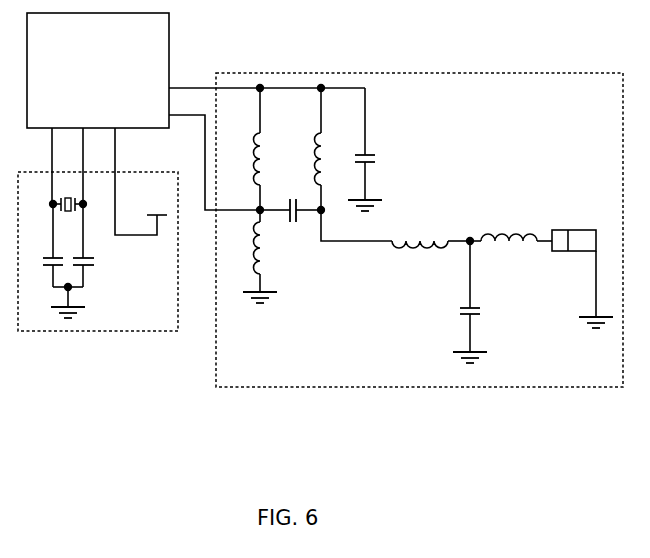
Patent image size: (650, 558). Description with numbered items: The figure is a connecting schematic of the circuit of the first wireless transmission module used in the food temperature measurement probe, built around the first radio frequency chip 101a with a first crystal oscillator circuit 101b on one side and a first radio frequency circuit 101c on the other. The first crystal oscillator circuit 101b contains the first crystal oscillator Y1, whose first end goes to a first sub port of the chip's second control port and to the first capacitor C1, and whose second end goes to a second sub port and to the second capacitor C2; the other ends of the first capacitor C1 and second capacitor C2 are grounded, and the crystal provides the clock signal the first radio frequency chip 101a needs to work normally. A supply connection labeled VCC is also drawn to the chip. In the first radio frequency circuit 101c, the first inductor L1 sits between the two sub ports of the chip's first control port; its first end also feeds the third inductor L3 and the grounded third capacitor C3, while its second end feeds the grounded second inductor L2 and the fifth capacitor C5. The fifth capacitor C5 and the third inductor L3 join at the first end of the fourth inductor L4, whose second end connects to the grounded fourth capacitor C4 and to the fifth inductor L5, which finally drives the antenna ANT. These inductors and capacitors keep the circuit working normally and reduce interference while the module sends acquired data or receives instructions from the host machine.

The first radio frequency chip 101a is at (98, 70).
The first crystal oscillator circuit 101b is at (20, 333).
The first radio frequency circuit 101c is at (396, 73).
The first crystal oscillator Y1 is at (68, 196).
The first capacitor C1 is at (43, 245).
The second capacitor C2 is at (94, 245).
The third capacitor C3 is at (376, 149).
The fourth capacitor C4 is at (482, 302).
The fifth capacitor C5 is at (290, 203).
The first inductor L1 is at (243, 149).
The second inductor L2 is at (255, 256).
The third inductor L3 is at (307, 149).
The fourth inductor L4 is at (431, 257).
The fifth inductor L5 is at (511, 230).
The supply voltage terminal VCC is at (156, 207).
The antenna ANT is at (582, 272).